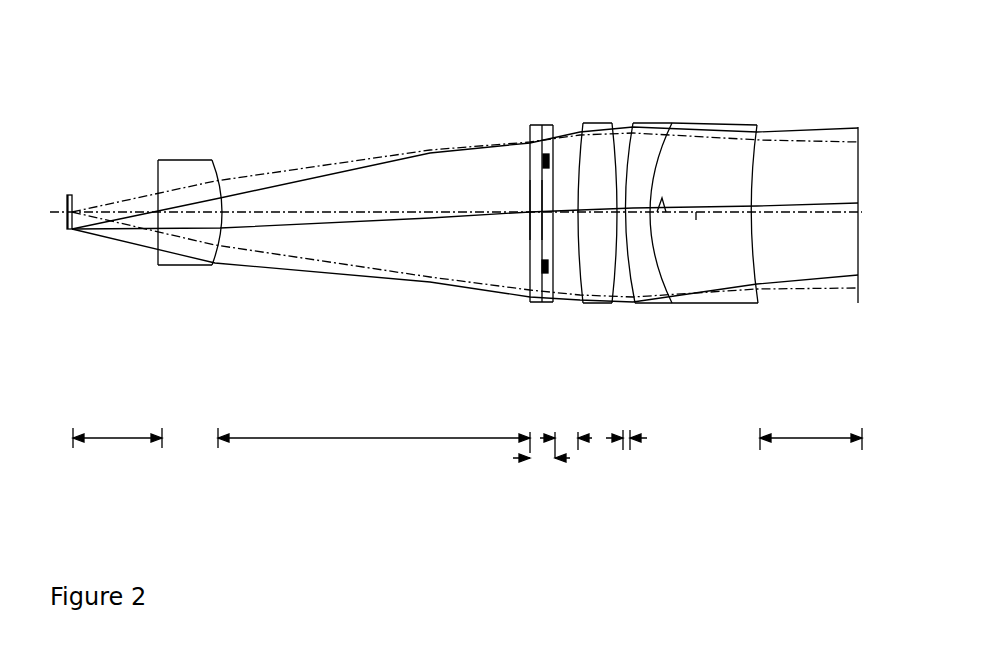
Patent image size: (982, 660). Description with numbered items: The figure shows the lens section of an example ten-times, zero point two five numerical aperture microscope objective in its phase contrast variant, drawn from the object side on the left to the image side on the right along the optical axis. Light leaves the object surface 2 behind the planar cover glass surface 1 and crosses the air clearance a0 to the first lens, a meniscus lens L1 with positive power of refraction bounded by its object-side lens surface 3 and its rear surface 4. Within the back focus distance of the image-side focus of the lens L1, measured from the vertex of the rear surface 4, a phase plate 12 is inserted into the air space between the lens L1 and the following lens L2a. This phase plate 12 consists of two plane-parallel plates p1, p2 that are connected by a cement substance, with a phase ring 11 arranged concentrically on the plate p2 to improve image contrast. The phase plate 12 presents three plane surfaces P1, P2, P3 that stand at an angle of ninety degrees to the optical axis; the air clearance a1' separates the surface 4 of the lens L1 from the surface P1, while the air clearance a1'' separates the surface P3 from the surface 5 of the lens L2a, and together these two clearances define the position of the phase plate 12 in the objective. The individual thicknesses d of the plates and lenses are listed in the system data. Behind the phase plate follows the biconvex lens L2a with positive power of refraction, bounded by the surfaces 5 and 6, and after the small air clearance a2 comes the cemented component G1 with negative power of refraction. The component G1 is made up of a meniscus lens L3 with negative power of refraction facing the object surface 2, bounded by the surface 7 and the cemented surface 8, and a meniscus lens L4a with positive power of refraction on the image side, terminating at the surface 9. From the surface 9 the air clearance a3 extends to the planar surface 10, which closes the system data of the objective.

The lens surface 1 is at (66, 212).
The object surface 2 is at (75, 208).
The lens surface 3 is at (158, 253).
The rear surface of the first lens 4 is at (218, 257).
The lens surface 5 is at (593, 250).
The lens surface 6 is at (608, 300).
The lens surface 7 is at (630, 303).
The lens surface 8 is at (672, 265).
The lens surface 9 is at (752, 282).
The lens surface 10 is at (858, 282).
The phase ring 11 is at (542, 265).
The phase plate 12 is at (473, 199).
The meniscus lens L1 is at (186, 219).
The plane-parallel plate p1 is at (537, 150).
The plane-parallel plate p2 is at (547, 145).
The biconvex lens L2a is at (587, 220).
The meniscus lens L3 is at (666, 220).
The meniscus lens L4a is at (732, 220).
The cemented component G1 is at (707, 220).
The surface of plane plate P1 is at (530, 200).
The surface of plane plate P2 is at (538, 228).
The surface of plane plate P3 is at (548, 243).
The air clearance a0 is at (117, 420).
The air clearance a1' is at (374, 423).
The air clearance a1'' is at (566, 422).
The air clearance a2 is at (626, 422).
The air clearance a3 is at (811, 422).
The thickness d is at (541, 460).